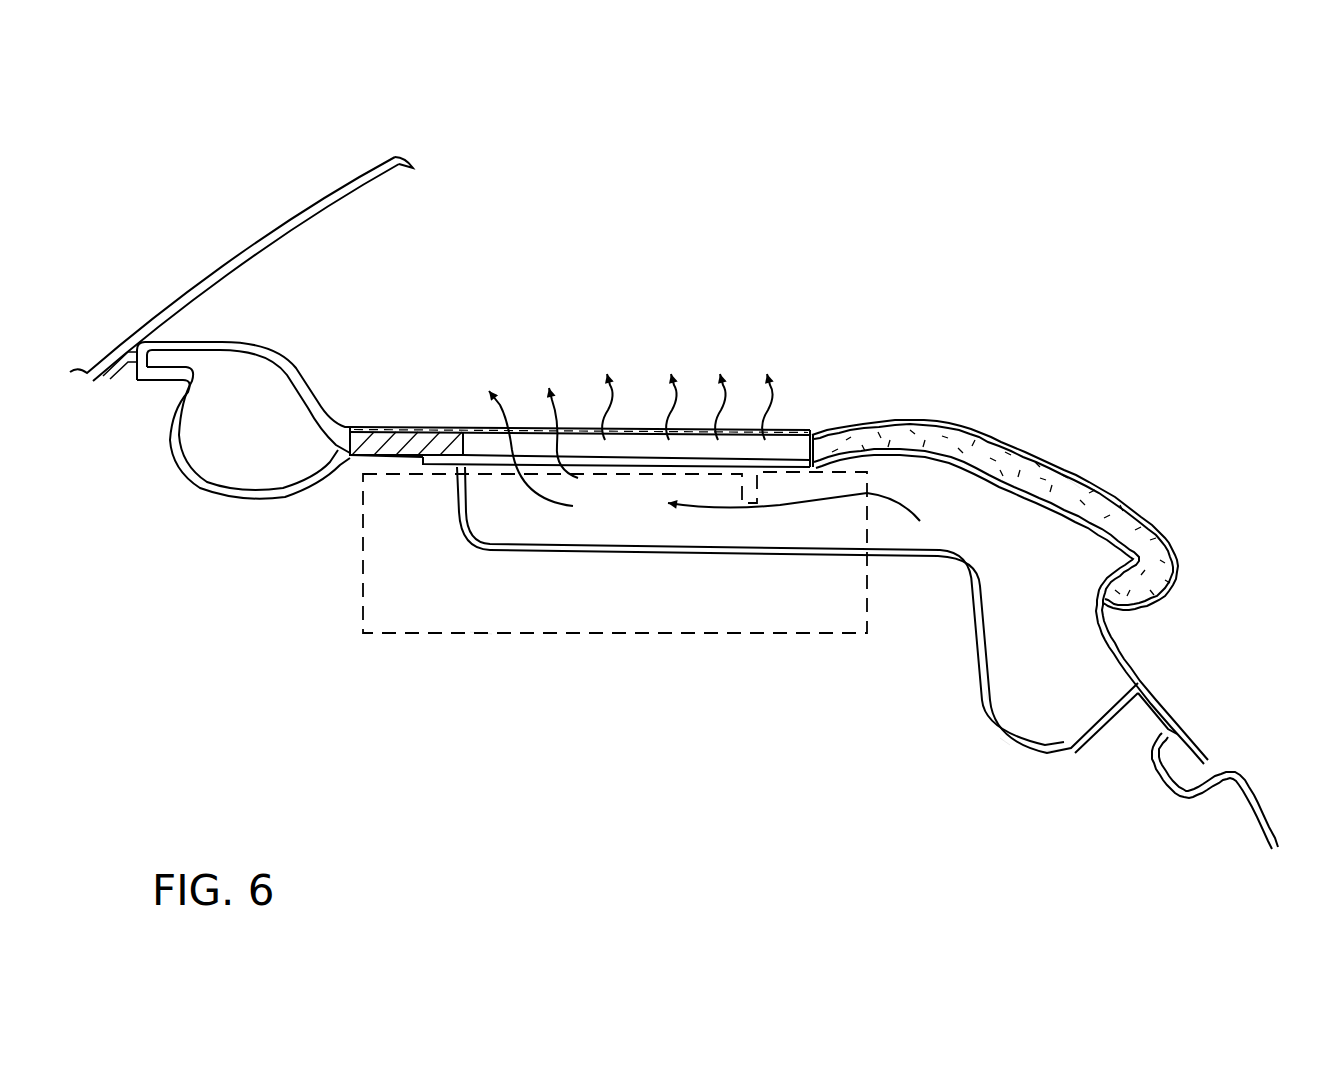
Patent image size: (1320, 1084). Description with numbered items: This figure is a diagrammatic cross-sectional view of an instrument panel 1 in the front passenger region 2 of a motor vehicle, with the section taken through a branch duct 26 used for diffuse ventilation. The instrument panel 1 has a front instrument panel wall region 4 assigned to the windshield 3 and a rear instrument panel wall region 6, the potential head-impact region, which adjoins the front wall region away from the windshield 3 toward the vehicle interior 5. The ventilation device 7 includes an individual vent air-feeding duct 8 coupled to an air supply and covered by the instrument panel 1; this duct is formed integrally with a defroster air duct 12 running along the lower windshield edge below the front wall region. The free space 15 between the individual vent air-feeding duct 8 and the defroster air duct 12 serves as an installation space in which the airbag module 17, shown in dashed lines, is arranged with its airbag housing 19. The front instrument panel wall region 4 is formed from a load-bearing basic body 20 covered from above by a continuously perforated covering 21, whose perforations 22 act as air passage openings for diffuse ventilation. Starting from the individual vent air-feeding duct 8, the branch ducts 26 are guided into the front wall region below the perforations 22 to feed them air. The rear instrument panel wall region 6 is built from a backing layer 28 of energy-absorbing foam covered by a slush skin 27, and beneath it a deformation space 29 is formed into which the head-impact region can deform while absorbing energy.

The instrument panel 1 is at (887, 420).
The front passenger region 2 is at (833, 322).
The windshield 3 is at (223, 266).
The front instrument panel wall region 4 is at (396, 430).
The vehicle interior 5 is at (1242, 725).
The rear instrument panel wall region 6 is at (1069, 472).
The ventilation device 7 is at (967, 735).
The individual vent air-feeding duct 8 is at (1069, 749).
The defroster air duct 12 is at (218, 478).
The free space 15 is at (627, 660).
The airbag module 17 is at (401, 635).
The airbag housing 19 is at (481, 633).
The basic body 20 is at (447, 440).
The covering 21 is at (358, 428).
The perforations 22 is at (527, 432).
The branch ducts 26 is at (566, 545).
The slush skin 27 is at (1027, 455).
The backing layer 28 is at (1093, 502).
The deformation space 29 is at (1001, 750).